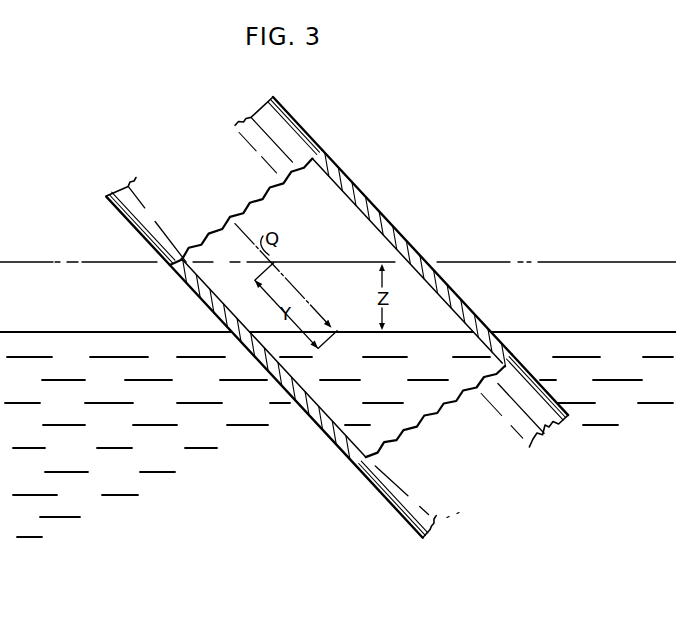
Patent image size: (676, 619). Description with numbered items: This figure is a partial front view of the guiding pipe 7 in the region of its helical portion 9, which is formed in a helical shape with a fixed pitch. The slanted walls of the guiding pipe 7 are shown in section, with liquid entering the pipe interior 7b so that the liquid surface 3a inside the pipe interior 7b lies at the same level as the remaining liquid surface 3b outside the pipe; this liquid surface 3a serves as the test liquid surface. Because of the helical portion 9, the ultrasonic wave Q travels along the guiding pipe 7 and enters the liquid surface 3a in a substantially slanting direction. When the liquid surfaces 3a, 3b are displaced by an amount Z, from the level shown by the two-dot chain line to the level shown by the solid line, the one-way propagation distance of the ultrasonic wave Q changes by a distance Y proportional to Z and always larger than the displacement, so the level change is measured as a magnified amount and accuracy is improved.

The guiding pipe 7 is at (306, 130).
The pipe interior 7b is at (204, 302).
The helical portion 9 is at (356, 181).
The liquid surface 3a is at (348, 261).
The remaining liquid surface 3b is at (80, 262).